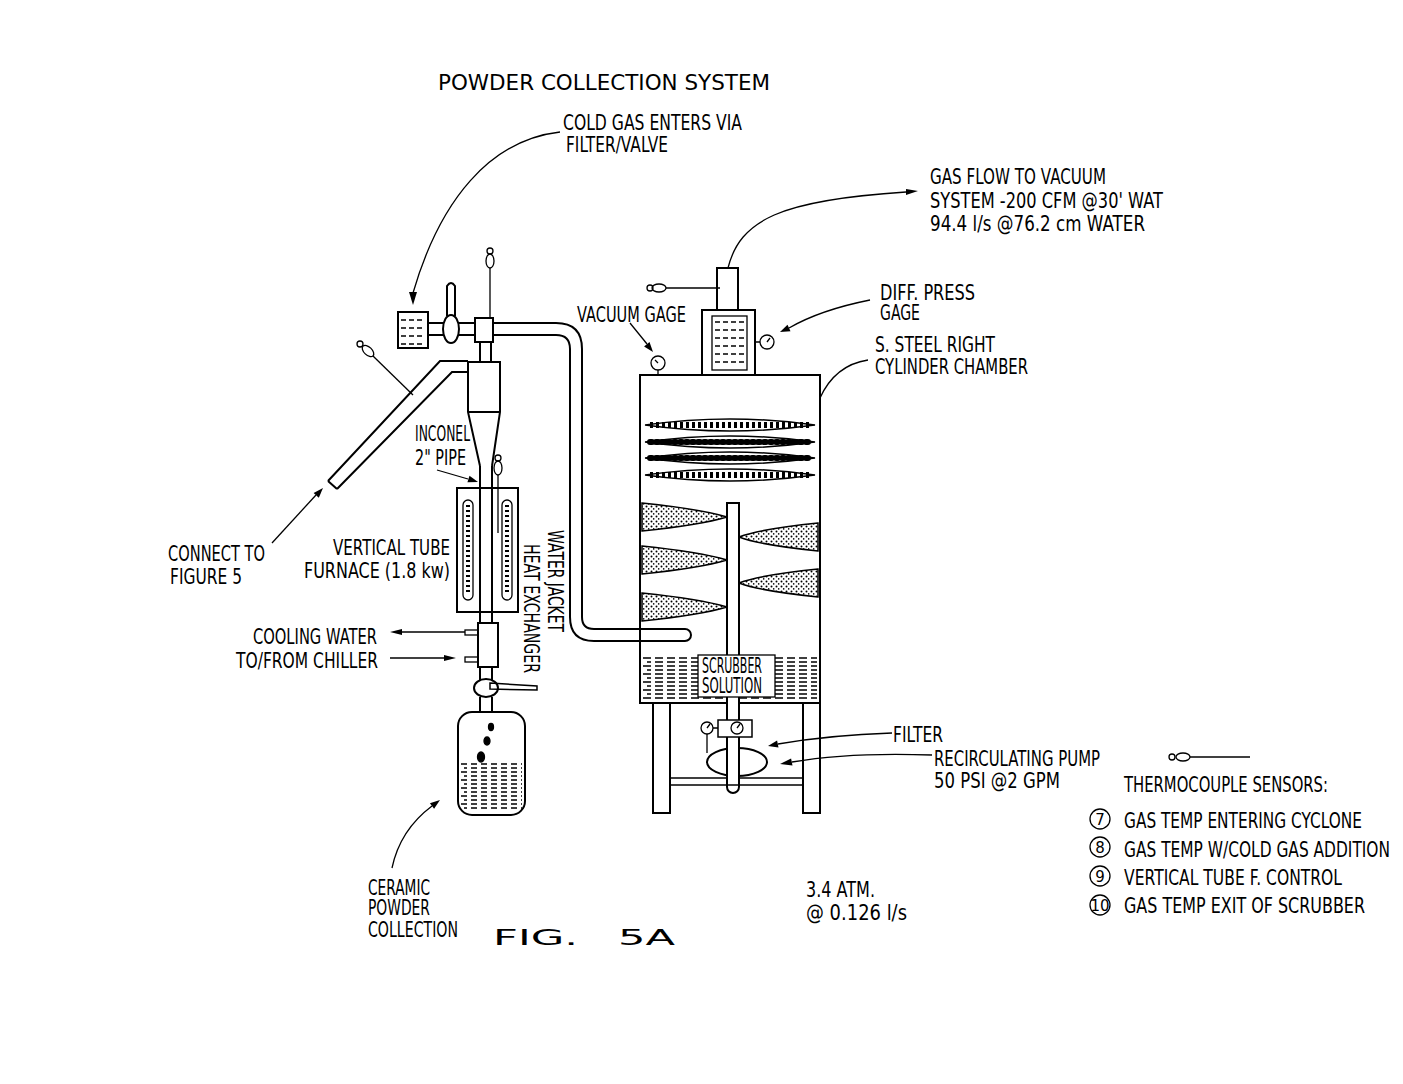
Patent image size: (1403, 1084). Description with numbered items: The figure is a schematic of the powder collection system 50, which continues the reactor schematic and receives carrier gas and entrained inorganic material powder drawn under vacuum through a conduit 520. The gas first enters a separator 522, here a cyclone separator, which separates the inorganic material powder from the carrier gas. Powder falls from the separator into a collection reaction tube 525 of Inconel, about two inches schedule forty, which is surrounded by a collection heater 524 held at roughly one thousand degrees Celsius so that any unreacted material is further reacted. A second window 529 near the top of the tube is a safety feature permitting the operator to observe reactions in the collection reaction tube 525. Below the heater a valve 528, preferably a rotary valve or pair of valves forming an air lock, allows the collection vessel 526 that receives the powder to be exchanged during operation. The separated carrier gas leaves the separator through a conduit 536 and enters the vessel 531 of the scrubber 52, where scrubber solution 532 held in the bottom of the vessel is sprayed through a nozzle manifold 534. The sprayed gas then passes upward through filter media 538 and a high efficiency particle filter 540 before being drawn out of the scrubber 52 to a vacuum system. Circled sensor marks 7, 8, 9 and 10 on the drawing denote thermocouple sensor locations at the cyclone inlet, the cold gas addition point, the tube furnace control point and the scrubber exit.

The powder collection system 50 is at (352, 289).
The scrubber 52 is at (770, 821).
The conduit 520 is at (377, 422).
The separator 522 is at (519, 355).
The collection heater 524 is at (453, 490).
The collection reaction tube 525 is at (462, 555).
The collection vessel 526 is at (458, 765).
The valve 528 is at (444, 690).
The second window 529 is at (490, 299).
The vessel 531 is at (820, 567).
The scrubber solution 532 is at (662, 692).
The nozzle manifold 534 is at (762, 626).
The conduit 536 is at (577, 643).
The filter media 538 is at (809, 494).
The high efficiency particle (HEPA) filter 540 is at (763, 299).
The thermocouple sensor gas temp entering cyclone 7 is at (375, 368).
The thermocouple sensor gas temp with cold gas addition 8 is at (477, 280).
The thermocouple sensor vertical tube furnace control 9 is at (510, 493).
The thermocouple sensor gas temp exit of scrubber 10 is at (683, 272).